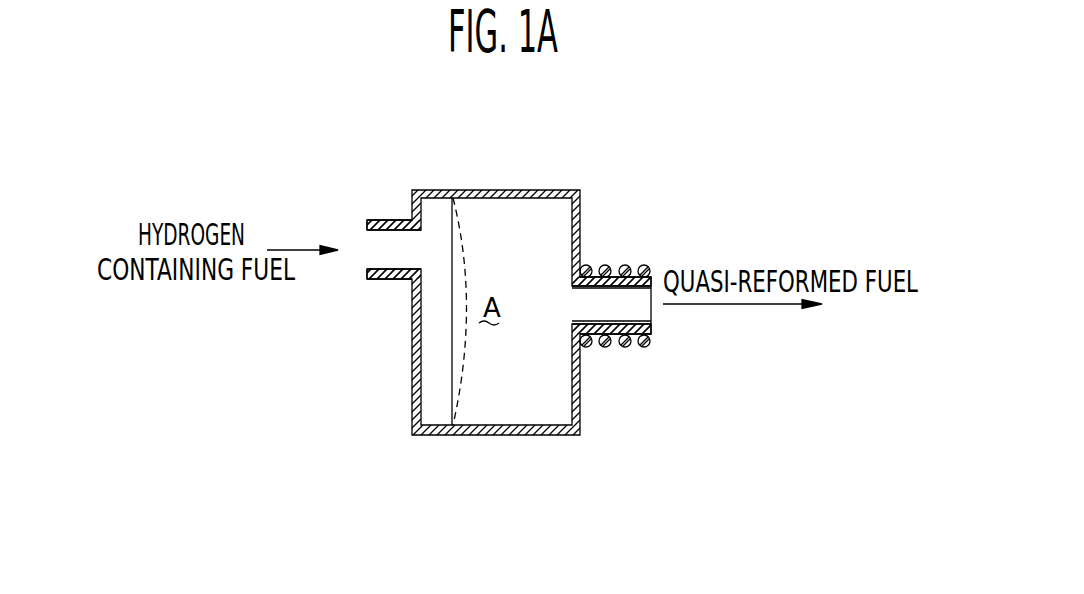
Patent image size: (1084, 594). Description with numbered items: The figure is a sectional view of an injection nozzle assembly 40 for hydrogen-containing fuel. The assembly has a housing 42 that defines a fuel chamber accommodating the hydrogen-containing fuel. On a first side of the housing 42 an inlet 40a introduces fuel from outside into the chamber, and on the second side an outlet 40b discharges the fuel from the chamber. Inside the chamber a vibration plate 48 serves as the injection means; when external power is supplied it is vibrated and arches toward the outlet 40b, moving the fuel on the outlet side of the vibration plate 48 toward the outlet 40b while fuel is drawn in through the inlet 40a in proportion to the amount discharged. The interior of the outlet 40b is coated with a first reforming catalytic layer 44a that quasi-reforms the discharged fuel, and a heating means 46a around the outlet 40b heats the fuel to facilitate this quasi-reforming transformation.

The injection nozzle assembly 40 is at (570, 163).
The inlet 40a is at (373, 249).
The outlet 40b is at (629, 298).
The housing 42 is at (442, 435).
The first reforming catalytic layer 44a is at (642, 321).
The heating means 46a is at (627, 265).
The vibration plate 48 is at (452, 253).